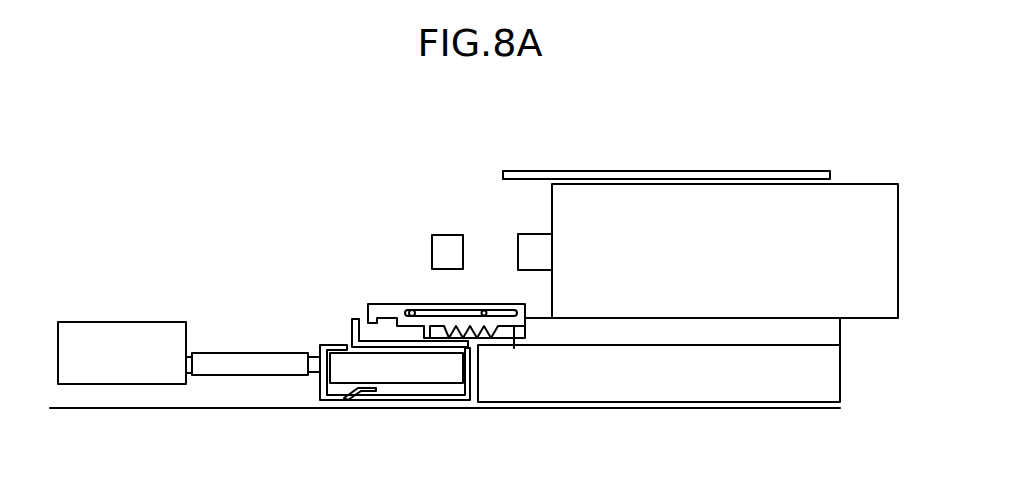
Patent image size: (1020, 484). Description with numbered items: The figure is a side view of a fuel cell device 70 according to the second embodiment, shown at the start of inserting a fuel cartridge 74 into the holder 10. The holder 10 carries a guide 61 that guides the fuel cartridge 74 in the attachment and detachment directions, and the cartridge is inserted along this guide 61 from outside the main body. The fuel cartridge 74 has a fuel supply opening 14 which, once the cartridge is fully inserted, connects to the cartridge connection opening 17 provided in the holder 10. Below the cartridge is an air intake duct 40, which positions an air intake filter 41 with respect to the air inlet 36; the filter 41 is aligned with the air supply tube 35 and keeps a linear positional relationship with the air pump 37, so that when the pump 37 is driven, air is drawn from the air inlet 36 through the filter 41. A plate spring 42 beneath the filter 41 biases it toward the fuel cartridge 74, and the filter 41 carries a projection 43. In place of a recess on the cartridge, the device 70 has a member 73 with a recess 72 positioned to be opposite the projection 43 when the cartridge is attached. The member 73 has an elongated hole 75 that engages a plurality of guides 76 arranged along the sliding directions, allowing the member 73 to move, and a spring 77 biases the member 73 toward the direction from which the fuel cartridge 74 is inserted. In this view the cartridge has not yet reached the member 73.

The holder 10 is at (735, 220).
The fuel supply opening 14 is at (533, 242).
The cartridge connection opening 17 is at (446, 243).
The air supply tube 35 is at (217, 358).
The air inlet 36 is at (322, 363).
The air pump 37 is at (115, 357).
The air intake duct 40 is at (396, 404).
The air intake filter 41 is at (447, 375).
The plate spring 42 is at (360, 397).
The projection 43 is at (352, 330).
The guide 61 is at (700, 175).
The fuel cell device 70 is at (639, 150).
The recess 72 is at (438, 336).
The member 73 is at (484, 305).
The fuel cartridge 74 is at (783, 195).
The elongated hole 75 is at (505, 305).
The guides 76 is at (478, 325).
The spring 77 is at (515, 338).